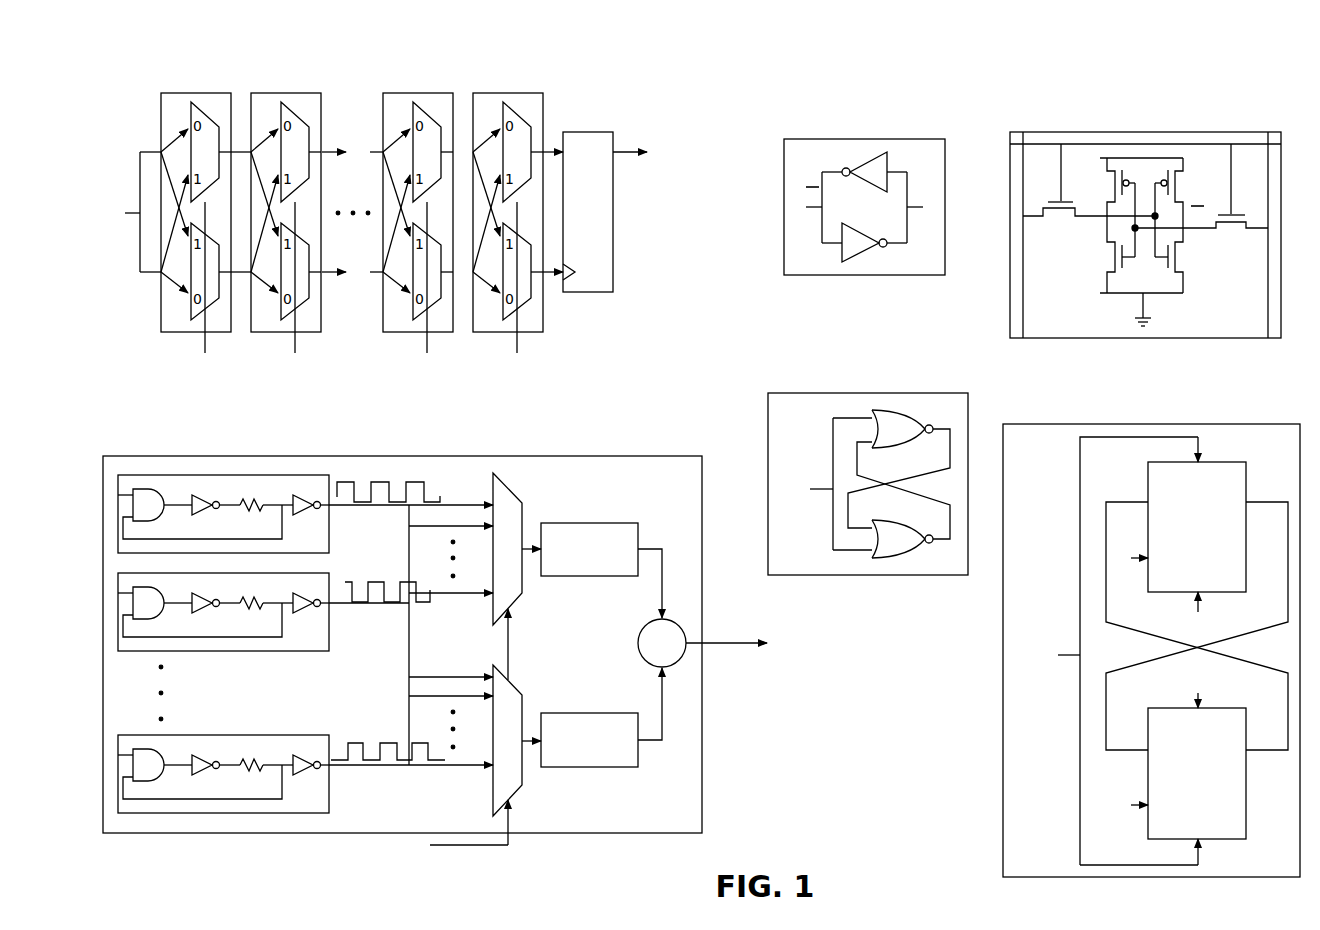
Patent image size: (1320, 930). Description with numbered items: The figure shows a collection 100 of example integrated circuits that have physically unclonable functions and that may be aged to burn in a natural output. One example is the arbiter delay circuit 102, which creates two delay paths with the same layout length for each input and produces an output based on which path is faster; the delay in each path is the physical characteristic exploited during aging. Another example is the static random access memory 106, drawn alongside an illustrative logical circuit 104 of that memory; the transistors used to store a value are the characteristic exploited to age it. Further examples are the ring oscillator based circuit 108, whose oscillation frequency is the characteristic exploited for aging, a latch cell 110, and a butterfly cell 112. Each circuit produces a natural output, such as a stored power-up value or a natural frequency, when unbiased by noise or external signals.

The random number generator system 100 is at (717, 67).
The arbiter delay circuit 102 is at (651, 138).
The logical circuit 104 is at (900, 139).
The static random access memory (SRAM) 106 is at (1223, 131).
The ring oscillator based circuit 108 is at (645, 456).
The latch cell 110 is at (912, 393).
The butterfly cell 112 is at (1225, 424).